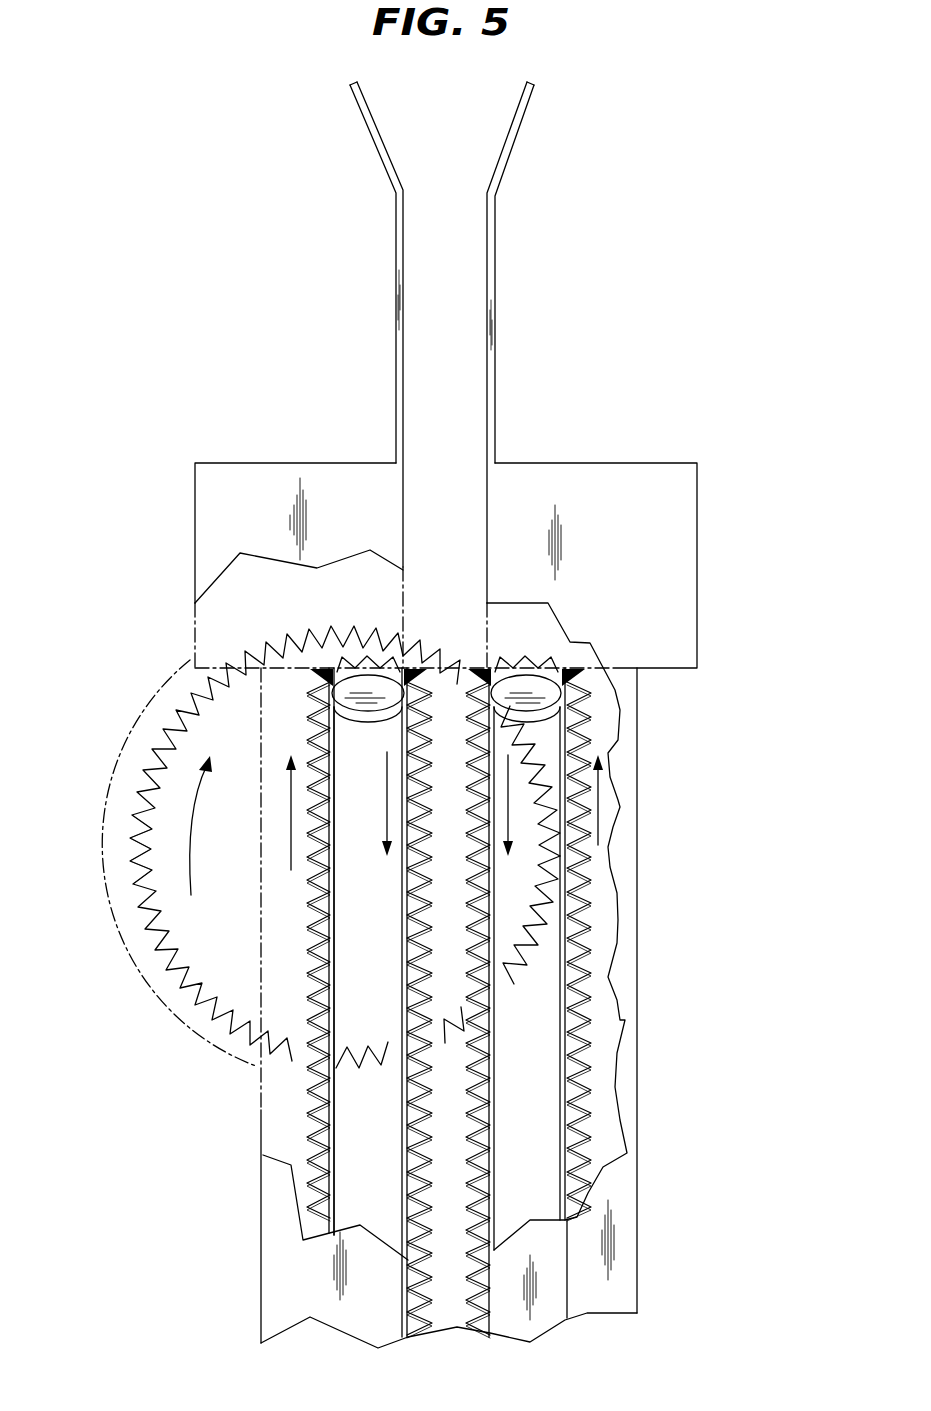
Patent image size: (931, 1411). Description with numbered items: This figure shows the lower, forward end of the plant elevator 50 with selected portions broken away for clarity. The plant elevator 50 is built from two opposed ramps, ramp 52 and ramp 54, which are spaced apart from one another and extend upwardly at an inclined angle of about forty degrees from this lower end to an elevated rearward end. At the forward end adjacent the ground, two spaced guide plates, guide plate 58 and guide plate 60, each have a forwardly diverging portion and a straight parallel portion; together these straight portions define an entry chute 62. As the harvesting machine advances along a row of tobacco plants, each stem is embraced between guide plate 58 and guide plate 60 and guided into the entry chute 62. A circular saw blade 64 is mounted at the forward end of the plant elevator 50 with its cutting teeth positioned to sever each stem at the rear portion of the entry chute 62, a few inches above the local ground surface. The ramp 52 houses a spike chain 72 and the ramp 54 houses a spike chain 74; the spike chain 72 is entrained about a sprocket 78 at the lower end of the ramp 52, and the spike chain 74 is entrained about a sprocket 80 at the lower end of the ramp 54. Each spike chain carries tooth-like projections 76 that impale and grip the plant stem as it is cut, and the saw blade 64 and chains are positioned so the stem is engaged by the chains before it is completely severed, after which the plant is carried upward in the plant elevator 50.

The plant elevator 50 is at (656, 1265).
The ramp 52 is at (280, 1285).
The ramp 54 is at (622, 1195).
The guide plate 58 is at (395, 258).
The guide plate 60 is at (493, 271).
The entry chute 62 is at (457, 343).
The circular saw blade 64 is at (169, 874).
The spike chain 72 is at (603, 925).
The spike chain 74 is at (300, 1111).
The tooth-like projections 76 is at (160, 960).
The sprocket 78 is at (537, 683).
The sprocket 80 is at (355, 683).